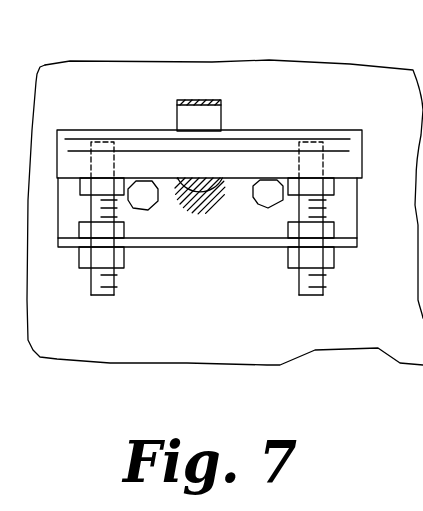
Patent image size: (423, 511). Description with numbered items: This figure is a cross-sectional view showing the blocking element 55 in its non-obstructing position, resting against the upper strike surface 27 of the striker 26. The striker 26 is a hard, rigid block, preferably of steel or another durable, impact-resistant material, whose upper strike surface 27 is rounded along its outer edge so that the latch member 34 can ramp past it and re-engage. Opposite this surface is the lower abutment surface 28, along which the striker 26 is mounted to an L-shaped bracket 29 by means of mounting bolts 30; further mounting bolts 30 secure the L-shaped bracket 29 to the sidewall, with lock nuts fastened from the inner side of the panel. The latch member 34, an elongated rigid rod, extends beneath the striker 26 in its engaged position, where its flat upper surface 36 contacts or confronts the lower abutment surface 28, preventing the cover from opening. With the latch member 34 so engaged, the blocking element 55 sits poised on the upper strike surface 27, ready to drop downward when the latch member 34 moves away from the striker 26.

The striker 26 is at (119, 130).
The upper strike surface 27 is at (325, 129).
The lower abutment surface 28 is at (227, 178).
The L-shaped bracket 29 is at (62, 231).
The mounting bolts 30 is at (145, 202).
The latch member 34 is at (205, 210).
The flat upper surface 36 is at (200, 178).
The blocking element 55 is at (181, 119).